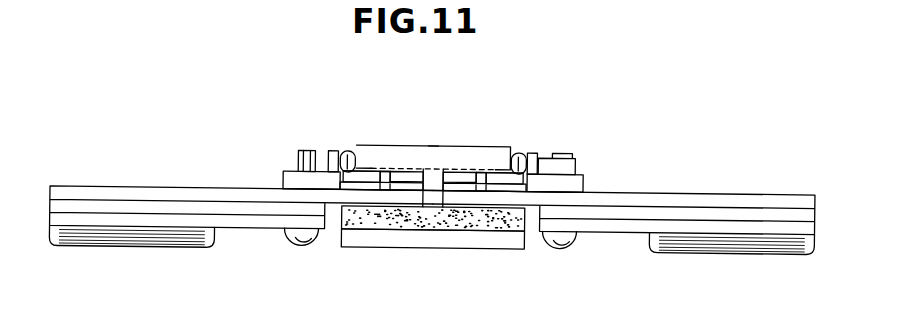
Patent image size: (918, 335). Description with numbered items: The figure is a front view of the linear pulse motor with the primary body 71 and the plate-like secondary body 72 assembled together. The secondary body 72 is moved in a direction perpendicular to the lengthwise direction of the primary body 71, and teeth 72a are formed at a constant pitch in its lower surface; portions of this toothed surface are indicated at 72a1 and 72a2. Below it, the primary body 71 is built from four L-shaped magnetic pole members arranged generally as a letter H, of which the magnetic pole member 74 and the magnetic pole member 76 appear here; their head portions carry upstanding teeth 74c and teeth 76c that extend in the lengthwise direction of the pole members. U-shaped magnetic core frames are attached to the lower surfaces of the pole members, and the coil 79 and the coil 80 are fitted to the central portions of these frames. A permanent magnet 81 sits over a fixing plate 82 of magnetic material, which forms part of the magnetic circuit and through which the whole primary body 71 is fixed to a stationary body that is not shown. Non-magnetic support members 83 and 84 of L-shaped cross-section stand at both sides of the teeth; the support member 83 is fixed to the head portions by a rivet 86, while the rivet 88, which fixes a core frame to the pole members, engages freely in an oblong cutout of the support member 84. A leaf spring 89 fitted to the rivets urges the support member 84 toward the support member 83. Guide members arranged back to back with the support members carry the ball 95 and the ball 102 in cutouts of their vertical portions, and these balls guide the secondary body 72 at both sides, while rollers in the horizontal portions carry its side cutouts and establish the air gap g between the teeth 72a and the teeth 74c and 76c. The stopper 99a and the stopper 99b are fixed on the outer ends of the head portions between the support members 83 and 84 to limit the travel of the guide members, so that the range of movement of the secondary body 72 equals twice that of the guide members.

The primary body 71 is at (247, 116).
The secondary body 72 is at (460, 147).
The teeth 72a is at (416, 168).
The first portion of thin film layer 72a1 is at (468, 170).
The second portion of thin film layer 72a2 is at (400, 173).
The air gap g is at (430, 146).
The magnetic pole member 74 is at (697, 196).
The teeth 74c is at (467, 188).
The magnetic pole member 76 is at (173, 190).
The teeth 76c is at (412, 188).
The coil 79 is at (740, 247).
The coil 80 is at (128, 233).
The permanent magnet 81 is at (380, 222).
The fixing plate 82 is at (437, 248).
The support member 83 is at (287, 181).
The support member 84 is at (583, 187).
The rivet 86 is at (308, 150).
The rivet 88 is at (563, 156).
The leaf spring 89 is at (578, 165).
The ball 95 is at (341, 151).
The stopper 99a is at (500, 189).
The stopper 99b is at (363, 189).
The ball 102 is at (527, 153).